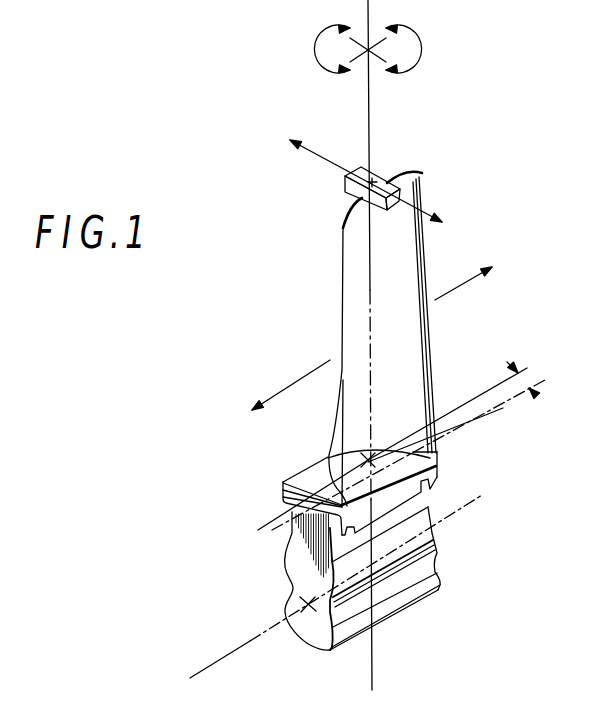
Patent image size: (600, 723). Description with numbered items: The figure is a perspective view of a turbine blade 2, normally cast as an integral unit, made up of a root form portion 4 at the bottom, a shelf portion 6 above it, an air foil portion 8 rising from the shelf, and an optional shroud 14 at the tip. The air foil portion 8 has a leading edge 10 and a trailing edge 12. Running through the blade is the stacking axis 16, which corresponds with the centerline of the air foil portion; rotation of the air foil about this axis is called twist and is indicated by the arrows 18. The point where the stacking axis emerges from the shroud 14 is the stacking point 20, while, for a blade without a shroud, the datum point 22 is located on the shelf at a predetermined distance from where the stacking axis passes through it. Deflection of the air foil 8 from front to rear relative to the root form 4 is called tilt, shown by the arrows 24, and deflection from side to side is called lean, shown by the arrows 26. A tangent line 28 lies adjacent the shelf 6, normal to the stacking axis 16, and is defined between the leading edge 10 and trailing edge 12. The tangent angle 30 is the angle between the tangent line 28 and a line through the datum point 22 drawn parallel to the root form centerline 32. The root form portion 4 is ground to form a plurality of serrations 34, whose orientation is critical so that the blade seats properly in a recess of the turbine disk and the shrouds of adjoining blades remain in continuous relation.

The blade 2 is at (452, 332).
The root form portion 4 is at (433, 541).
The shelf portion 6 is at (434, 464).
The air foil portion 8 is at (375, 319).
The leading edge 10 is at (422, 173).
The trailing edge 12 is at (343, 230).
The shroud 14 is at (345, 177).
The stacking axis 16 is at (373, 658).
The arrows (twist) 18 is at (318, 46).
The stacking point 20 is at (373, 178).
The datum point 22 is at (369, 462).
The arrows (tilt) 24 is at (456, 285).
The arrows (lean) 26 is at (328, 152).
The tangent line 28 is at (491, 418).
The tangent angle 30 is at (516, 393).
The root form centerline 32 is at (242, 641).
The serrations 34 is at (436, 568).